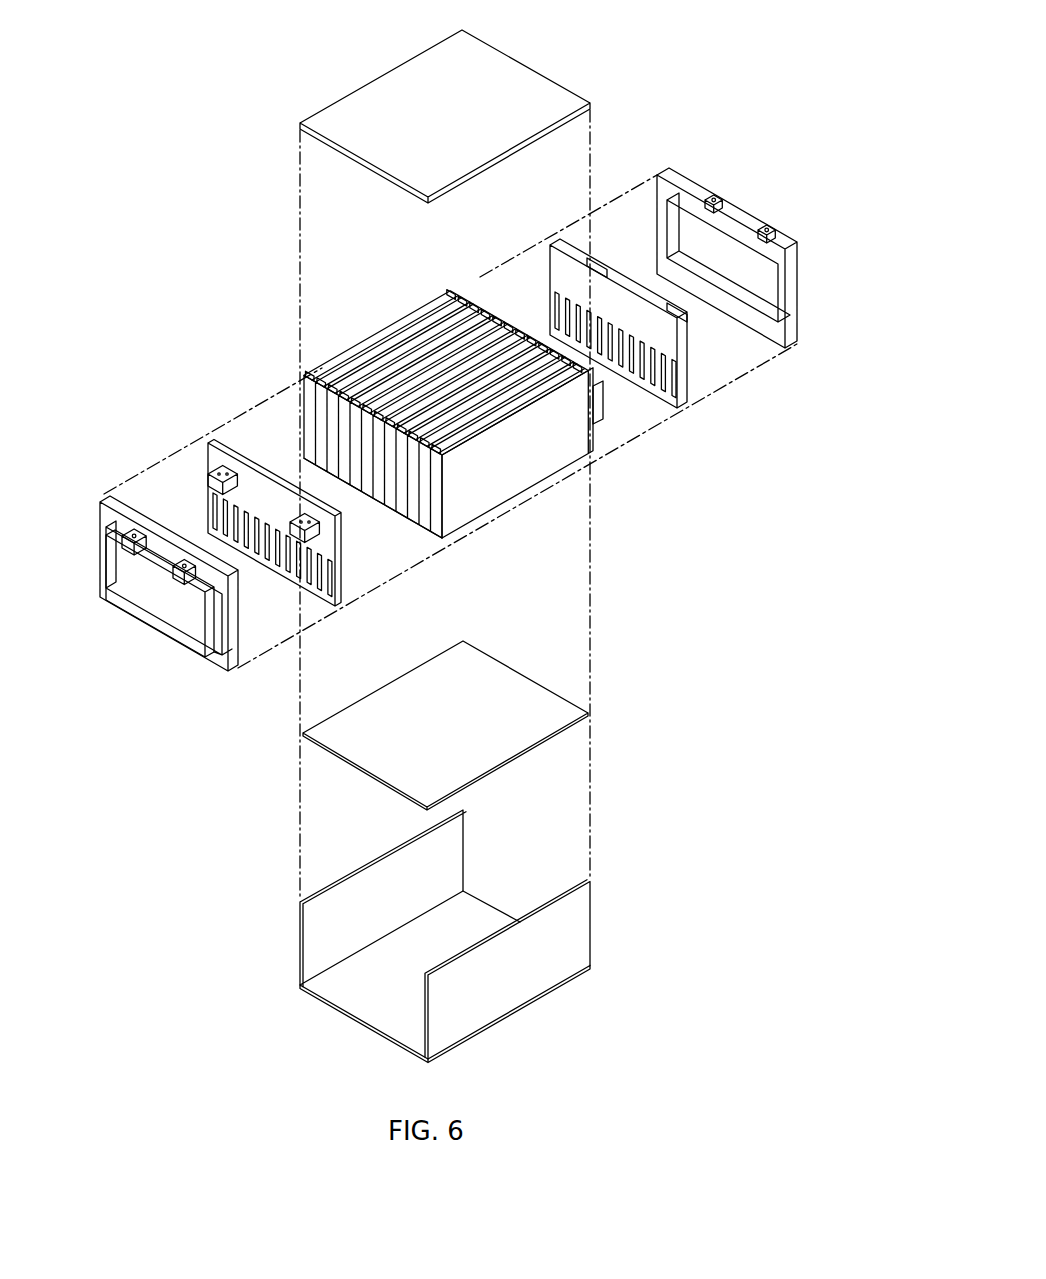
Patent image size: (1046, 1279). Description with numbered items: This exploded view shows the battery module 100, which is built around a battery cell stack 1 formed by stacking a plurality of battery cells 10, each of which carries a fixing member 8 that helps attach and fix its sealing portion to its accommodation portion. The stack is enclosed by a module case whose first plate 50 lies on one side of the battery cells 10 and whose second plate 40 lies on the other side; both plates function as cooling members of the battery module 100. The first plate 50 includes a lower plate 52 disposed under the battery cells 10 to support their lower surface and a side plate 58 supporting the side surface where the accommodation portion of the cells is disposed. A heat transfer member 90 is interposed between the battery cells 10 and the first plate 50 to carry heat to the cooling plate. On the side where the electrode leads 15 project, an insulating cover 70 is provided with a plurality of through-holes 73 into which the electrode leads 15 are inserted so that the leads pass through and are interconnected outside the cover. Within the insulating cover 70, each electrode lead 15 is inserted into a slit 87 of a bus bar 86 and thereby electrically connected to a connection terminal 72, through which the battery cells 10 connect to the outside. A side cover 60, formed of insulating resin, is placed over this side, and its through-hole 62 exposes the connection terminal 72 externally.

The battery module 100 is at (191, 43).
The battery cell stack 1 is at (474, 449).
The fixing member 8 is at (372, 352).
The battery cell 10 is at (436, 492).
The electrode lead 15 is at (412, 534).
The second plate 40 is at (515, 72).
The first plate 50 is at (395, 936).
The lower plate 52 is at (325, 1000).
The side plate 58 is at (300, 957).
The side cover 60 is at (448, 408).
The through-hole 62 is at (195, 592).
The insulating cover 70 is at (441, 471).
The connection terminal 72 is at (216, 470).
The through-hole 73 is at (653, 388).
The bus bar 86 is at (253, 505).
The slit 87 is at (270, 560).
The heat transfer member 90 is at (513, 673).